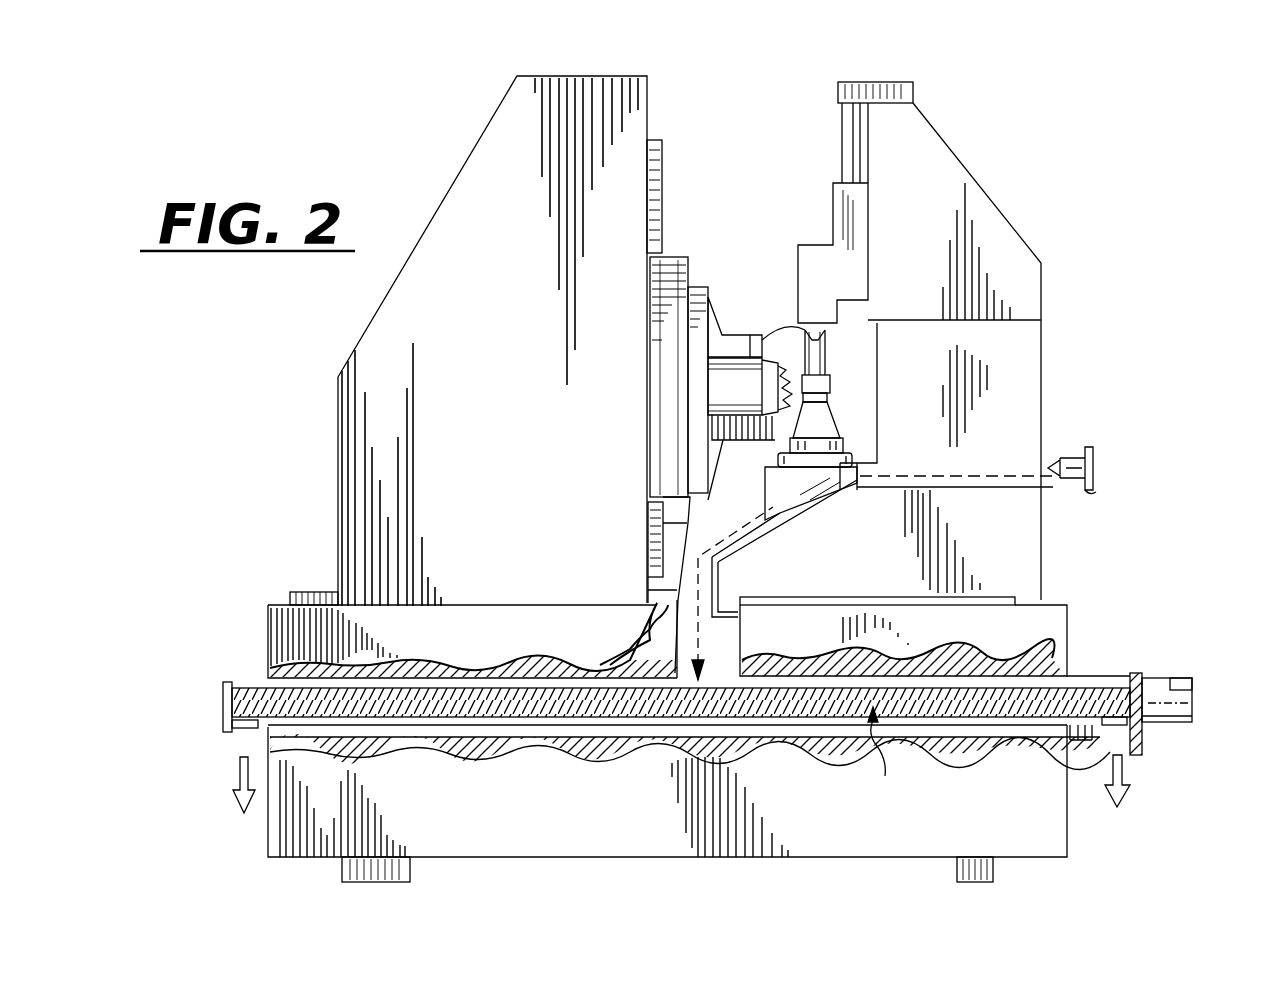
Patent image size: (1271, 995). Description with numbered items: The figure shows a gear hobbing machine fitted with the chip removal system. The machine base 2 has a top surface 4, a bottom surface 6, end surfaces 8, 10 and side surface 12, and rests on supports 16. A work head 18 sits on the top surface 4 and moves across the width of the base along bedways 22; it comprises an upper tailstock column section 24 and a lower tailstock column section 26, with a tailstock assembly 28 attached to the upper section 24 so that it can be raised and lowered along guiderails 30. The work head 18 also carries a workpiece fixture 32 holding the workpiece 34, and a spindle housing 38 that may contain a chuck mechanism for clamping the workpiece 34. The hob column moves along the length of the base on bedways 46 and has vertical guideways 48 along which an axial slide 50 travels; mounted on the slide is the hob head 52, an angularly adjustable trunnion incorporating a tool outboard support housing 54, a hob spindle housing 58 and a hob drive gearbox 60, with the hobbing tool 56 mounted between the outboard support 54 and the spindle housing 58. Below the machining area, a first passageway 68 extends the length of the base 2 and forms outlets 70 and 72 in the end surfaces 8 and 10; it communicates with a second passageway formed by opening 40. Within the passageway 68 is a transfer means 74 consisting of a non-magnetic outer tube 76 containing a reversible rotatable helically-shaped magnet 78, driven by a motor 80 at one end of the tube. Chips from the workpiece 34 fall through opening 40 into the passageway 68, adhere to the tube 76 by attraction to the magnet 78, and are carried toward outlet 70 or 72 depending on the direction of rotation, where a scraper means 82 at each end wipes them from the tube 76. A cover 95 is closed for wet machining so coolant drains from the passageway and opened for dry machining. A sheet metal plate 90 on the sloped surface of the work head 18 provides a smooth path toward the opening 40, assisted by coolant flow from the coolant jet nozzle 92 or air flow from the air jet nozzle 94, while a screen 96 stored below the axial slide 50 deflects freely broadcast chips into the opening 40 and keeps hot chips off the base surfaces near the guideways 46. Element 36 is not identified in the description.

The machine base 2 is at (1120, 837).
The top surface 4 is at (283, 580).
The bottom surface 6 is at (660, 858).
The end surface 8 is at (1070, 628).
The end surface 10 is at (268, 824).
The side surface 12 is at (444, 824).
The supports 16 is at (412, 872).
The work head 18 is at (1033, 540).
The bedways 22 is at (850, 590).
The upper tailstock column section 24 is at (1015, 228).
The lower tailstock column section 26 is at (1041, 385).
The tailstock assembly 28 is at (845, 282).
The guiderails 30 is at (838, 160).
The workpiece fixture 32 is at (846, 424).
The workpiece 34 is at (834, 384).
The strut 36 is at (835, 332).
The spindle housing 38 is at (812, 482).
The opening 40 is at (660, 641).
The bedways 46 is at (310, 592).
The guideways 48 is at (664, 152).
The axial slide 50 is at (686, 260).
The hob head 52 is at (702, 290).
The tool outboard support housing 54 is at (762, 348).
The hobbing tool 56 is at (814, 374).
The hob spindle housing 58 is at (764, 461).
The hob drive gearbox 60 is at (800, 340).
The first passageway 68 is at (950, 737).
The outlet 70 is at (1080, 727).
The outlet 72 is at (265, 737).
The transfer means 74 is at (889, 759).
The non-magnetic outer tube 76 is at (252, 686).
The helically-shaped magnet 78 is at (535, 728).
The motor 80 is at (1156, 682).
The scraper means 82 is at (226, 725).
The sheet metal plate 90 is at (790, 520).
The coolant jet nozzle 92 is at (1078, 450).
The air jet nozzle 94 is at (1093, 492).
The cover 95 is at (1124, 740).
The screen 96 is at (662, 552).